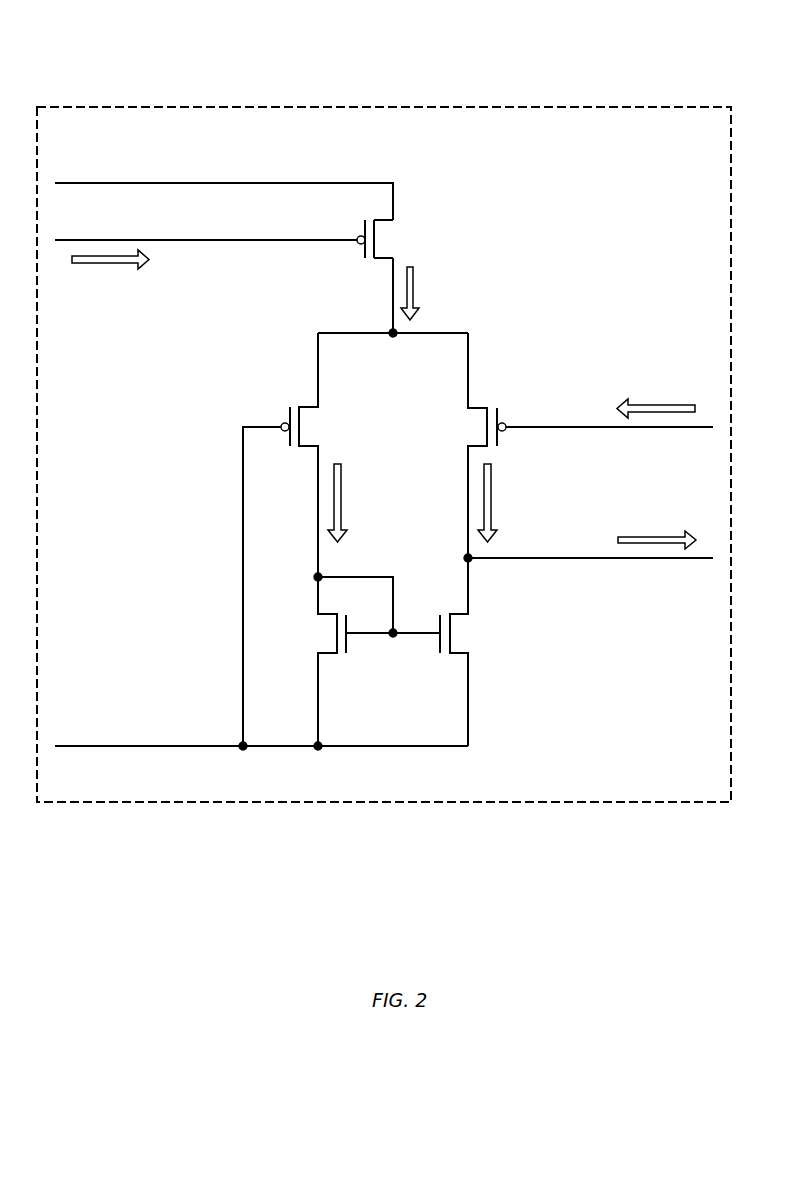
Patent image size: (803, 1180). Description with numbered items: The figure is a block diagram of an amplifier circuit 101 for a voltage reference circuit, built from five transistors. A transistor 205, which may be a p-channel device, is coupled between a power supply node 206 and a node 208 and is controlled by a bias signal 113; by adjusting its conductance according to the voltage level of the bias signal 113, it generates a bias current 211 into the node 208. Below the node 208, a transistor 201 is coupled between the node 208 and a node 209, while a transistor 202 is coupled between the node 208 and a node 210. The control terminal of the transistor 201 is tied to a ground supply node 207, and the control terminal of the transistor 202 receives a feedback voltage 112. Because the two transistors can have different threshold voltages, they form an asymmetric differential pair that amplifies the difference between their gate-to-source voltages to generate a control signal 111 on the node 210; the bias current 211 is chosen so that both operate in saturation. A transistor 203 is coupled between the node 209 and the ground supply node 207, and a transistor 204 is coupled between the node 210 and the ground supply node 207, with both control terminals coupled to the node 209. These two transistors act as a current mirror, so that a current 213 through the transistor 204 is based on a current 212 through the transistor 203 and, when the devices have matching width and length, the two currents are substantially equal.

The amplifier circuit 101 is at (410, 106).
The control signal 111 is at (651, 533).
The feedback voltage 112 is at (657, 403).
The bias signal 113 is at (107, 266).
The transistor 201 is at (296, 405).
The transistor 202 is at (492, 405).
The transistor 203 is at (345, 658).
The transistor 204 is at (446, 658).
The transistor 205 is at (385, 241).
The power supply node 206 is at (224, 178).
The ground supply node 207 is at (261, 723).
The node 208 is at (375, 336).
The node 209 is at (392, 638).
The node 210 is at (518, 561).
The bias current 211 is at (416, 288).
The current 212 is at (345, 504).
The current 213 is at (495, 504).